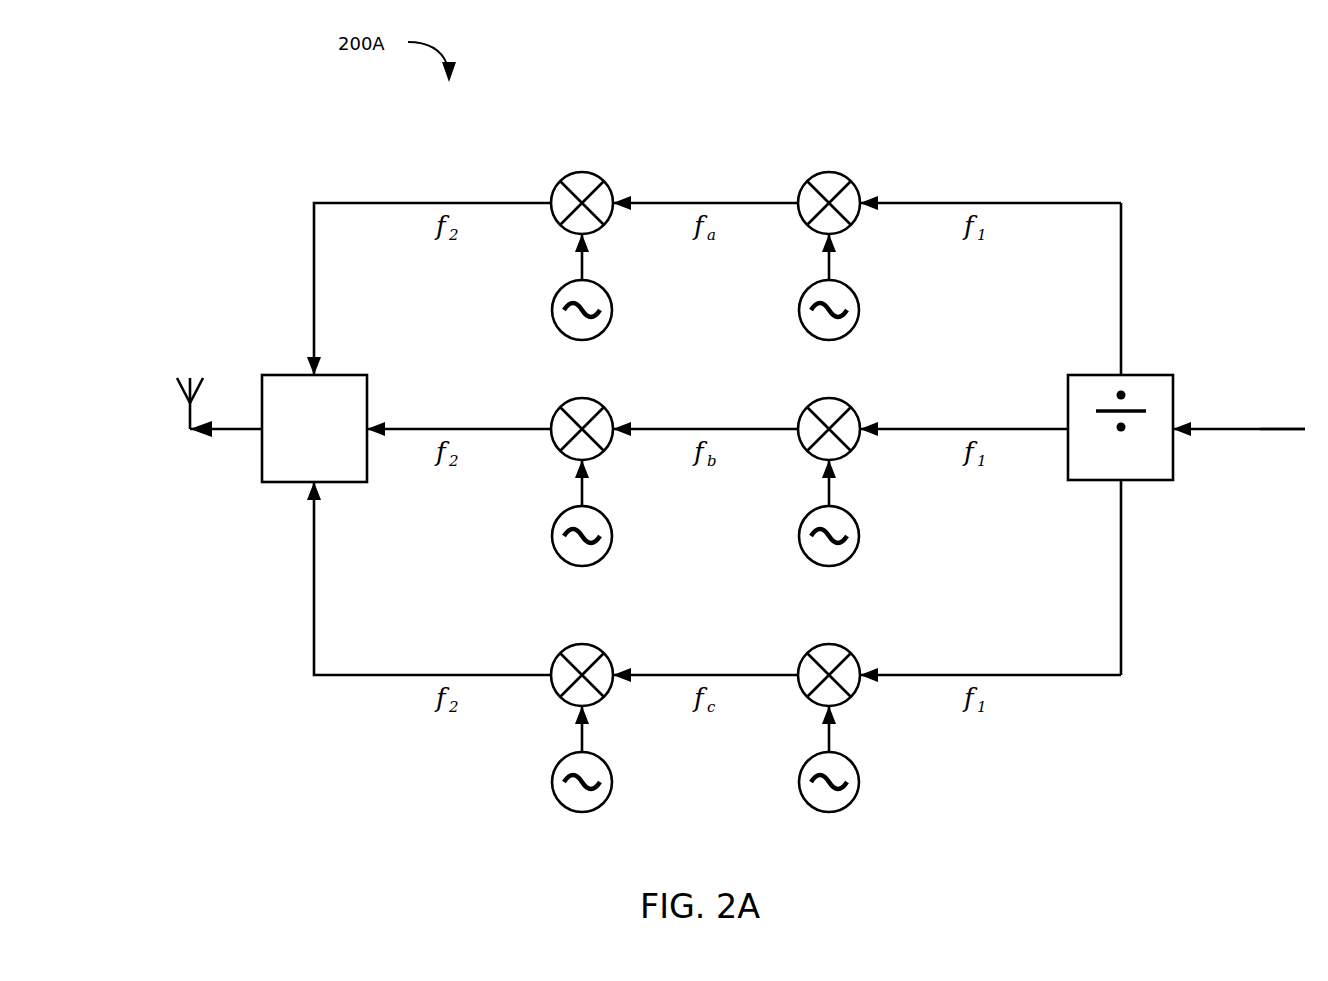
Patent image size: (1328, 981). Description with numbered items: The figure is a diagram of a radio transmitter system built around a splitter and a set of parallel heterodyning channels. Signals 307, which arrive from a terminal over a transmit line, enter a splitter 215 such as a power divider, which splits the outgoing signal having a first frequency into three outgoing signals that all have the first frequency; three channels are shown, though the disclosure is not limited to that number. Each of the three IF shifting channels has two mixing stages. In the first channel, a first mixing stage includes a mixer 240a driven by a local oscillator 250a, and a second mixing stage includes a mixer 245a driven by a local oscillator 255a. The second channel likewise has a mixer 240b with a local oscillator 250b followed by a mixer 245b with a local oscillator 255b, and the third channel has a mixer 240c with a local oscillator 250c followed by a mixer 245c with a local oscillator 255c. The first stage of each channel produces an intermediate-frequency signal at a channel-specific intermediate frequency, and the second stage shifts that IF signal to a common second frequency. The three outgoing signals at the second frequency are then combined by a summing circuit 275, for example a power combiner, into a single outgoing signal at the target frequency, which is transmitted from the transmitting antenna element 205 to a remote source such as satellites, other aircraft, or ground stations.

The transmitting antenna element 205 is at (190, 413).
The splitter 215 is at (1120, 427).
The mixer 240a is at (831, 172).
The mixer 240b is at (831, 398).
The mixer 240c is at (831, 644).
The mixer 245a is at (584, 172).
The mixer 245b is at (584, 398).
The mixer 245c is at (584, 644).
The local oscillator 250a is at (800, 312).
The local oscillator 250b is at (800, 538).
The local oscillator 250c is at (800, 784).
The local oscillator 255a is at (553, 312).
The local oscillator 255b is at (553, 538).
The local oscillator 255c is at (553, 784).
The summing circuit 275 is at (314, 428).
The signals 307 is at (1224, 427).